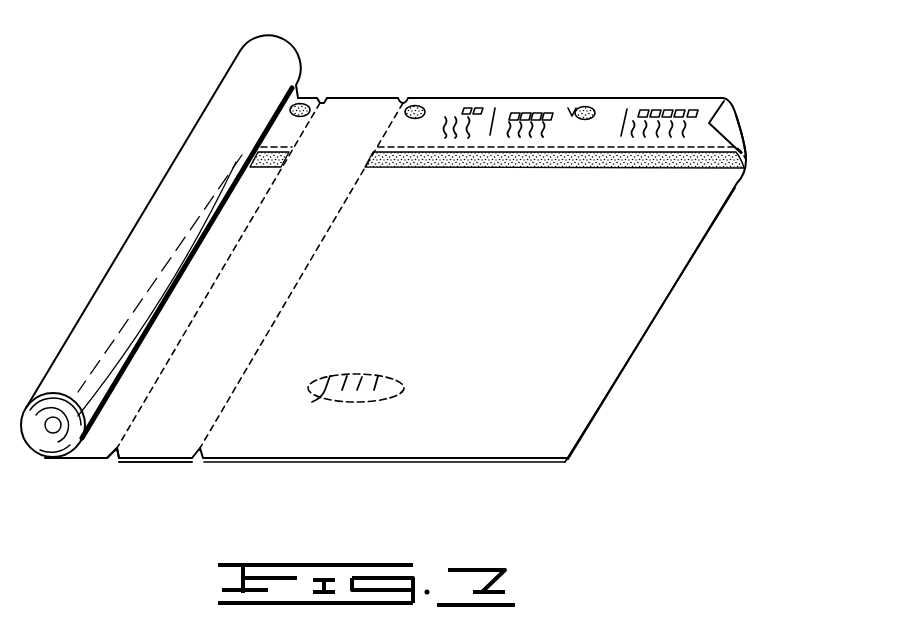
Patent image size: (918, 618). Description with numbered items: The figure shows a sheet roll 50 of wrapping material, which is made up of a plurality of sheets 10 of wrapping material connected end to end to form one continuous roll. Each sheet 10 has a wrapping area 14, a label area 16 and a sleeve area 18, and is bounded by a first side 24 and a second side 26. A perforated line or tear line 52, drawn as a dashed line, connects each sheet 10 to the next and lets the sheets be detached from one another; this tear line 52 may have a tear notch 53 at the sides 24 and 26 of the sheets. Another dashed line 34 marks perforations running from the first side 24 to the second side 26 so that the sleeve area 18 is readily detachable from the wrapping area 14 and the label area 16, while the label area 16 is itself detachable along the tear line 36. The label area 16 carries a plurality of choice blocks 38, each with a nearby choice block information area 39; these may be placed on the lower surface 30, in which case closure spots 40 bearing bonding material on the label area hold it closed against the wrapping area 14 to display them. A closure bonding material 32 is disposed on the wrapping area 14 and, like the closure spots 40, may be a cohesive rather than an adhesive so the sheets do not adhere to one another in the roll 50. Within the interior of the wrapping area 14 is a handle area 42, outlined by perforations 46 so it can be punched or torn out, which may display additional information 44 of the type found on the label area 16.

The sheet of material 10 is at (662, 308).
The wrapping area 14 is at (645, 235).
The label area 16 is at (566, 128).
The sleeve area 18 is at (163, 428).
The first side 24 is at (177, 463).
The second side 26 is at (358, 98).
The lower surface 30 is at (732, 122).
The closure bonding material 32 is at (692, 160).
The dashed line 34 is at (300, 278).
The tear line 36 is at (600, 148).
The choice block 38 is at (472, 110).
The choice block information area 39 is at (455, 124).
The closure spot 40 is at (413, 104).
The handle area 42 is at (320, 392).
The additional information 44 is at (340, 393).
The perforations 46 is at (377, 370).
The sheet roll 50 is at (164, 148).
The tear line 52 is at (230, 258).
The tear notch 53 is at (320, 98).